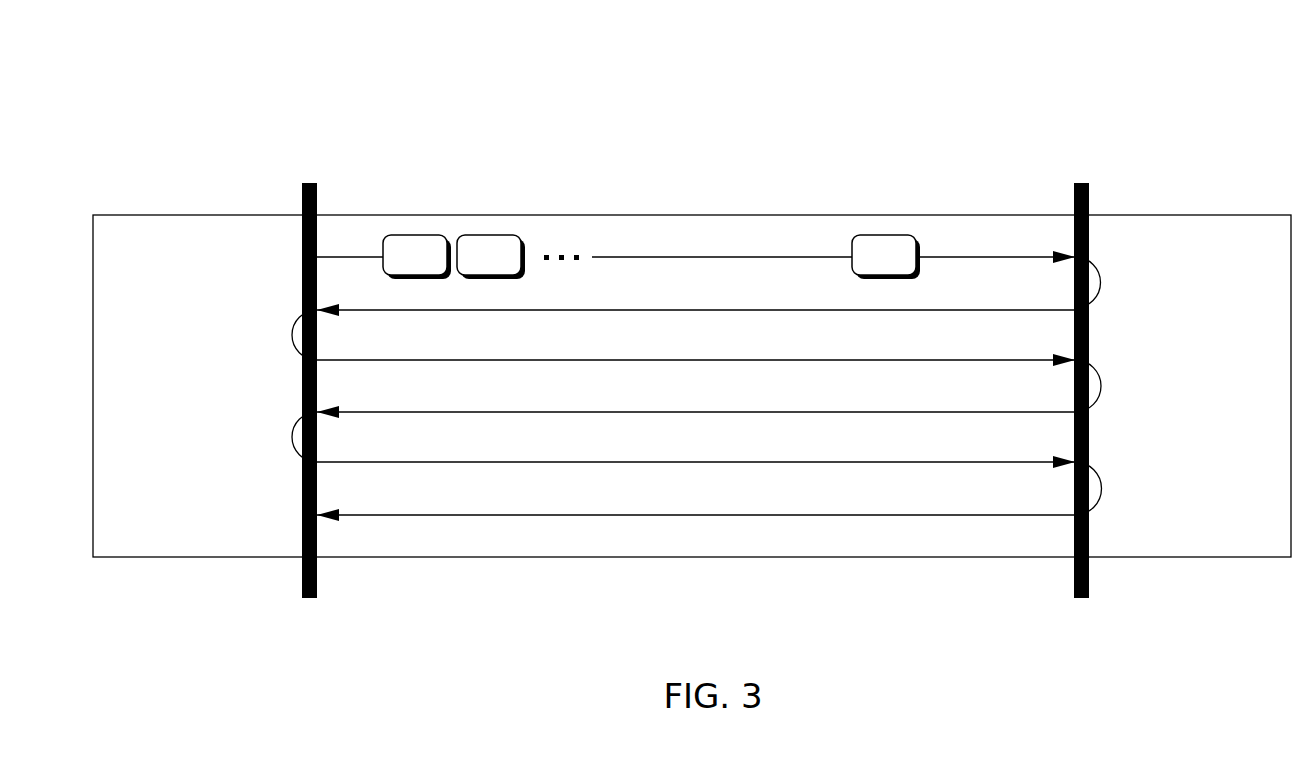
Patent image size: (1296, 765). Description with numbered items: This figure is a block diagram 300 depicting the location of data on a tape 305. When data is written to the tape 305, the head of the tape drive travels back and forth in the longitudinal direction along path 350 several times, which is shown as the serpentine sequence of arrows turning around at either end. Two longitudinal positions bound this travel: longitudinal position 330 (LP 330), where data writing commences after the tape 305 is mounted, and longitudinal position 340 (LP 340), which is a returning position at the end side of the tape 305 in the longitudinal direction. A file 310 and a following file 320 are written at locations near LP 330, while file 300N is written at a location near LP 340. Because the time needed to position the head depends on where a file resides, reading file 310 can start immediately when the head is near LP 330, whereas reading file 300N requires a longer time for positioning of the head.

The file transfer system 300 is at (694, 364).
The tape 305 is at (1148, 215).
The file 310 is at (410, 235).
The second file 320 is at (486, 235).
The file 300N is at (879, 235).
The longitudinal position 330 is at (309, 598).
The longitudinal position 340 is at (1081, 598).
The path 350 is at (291, 335).